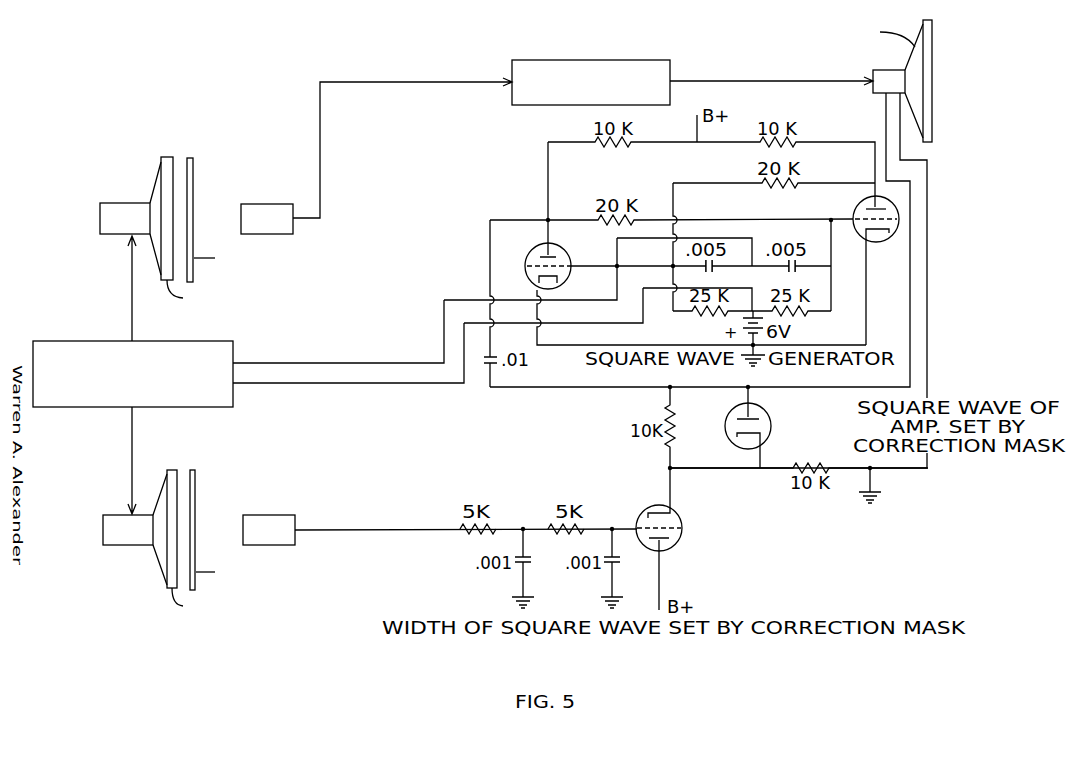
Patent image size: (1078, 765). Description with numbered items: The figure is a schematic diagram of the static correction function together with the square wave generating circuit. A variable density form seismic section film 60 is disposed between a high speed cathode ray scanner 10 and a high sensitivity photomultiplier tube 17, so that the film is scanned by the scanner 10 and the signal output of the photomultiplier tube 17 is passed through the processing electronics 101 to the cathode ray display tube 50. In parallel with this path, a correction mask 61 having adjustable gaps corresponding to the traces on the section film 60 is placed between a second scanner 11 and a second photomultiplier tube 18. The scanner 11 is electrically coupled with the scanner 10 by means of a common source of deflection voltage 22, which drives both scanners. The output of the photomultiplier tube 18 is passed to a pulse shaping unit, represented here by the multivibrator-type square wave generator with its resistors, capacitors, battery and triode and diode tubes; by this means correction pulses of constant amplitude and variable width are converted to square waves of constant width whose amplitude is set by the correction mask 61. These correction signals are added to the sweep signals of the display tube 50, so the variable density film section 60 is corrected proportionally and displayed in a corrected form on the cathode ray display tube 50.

The high speed cathode ray scanner 10 is at (158, 176).
The variable density form seismic section film 60 is at (194, 181).
The photomultiplier tube 17 is at (262, 204).
The common source of deflection voltage 22 is at (234, 353).
The scanner 11 is at (160, 566).
The correction mask 61 is at (196, 478).
The photomultiplier tube 18 is at (265, 515).
The processing electronics 101 is at (612, 60).
The cathode ray display tube 50 is at (933, 32).